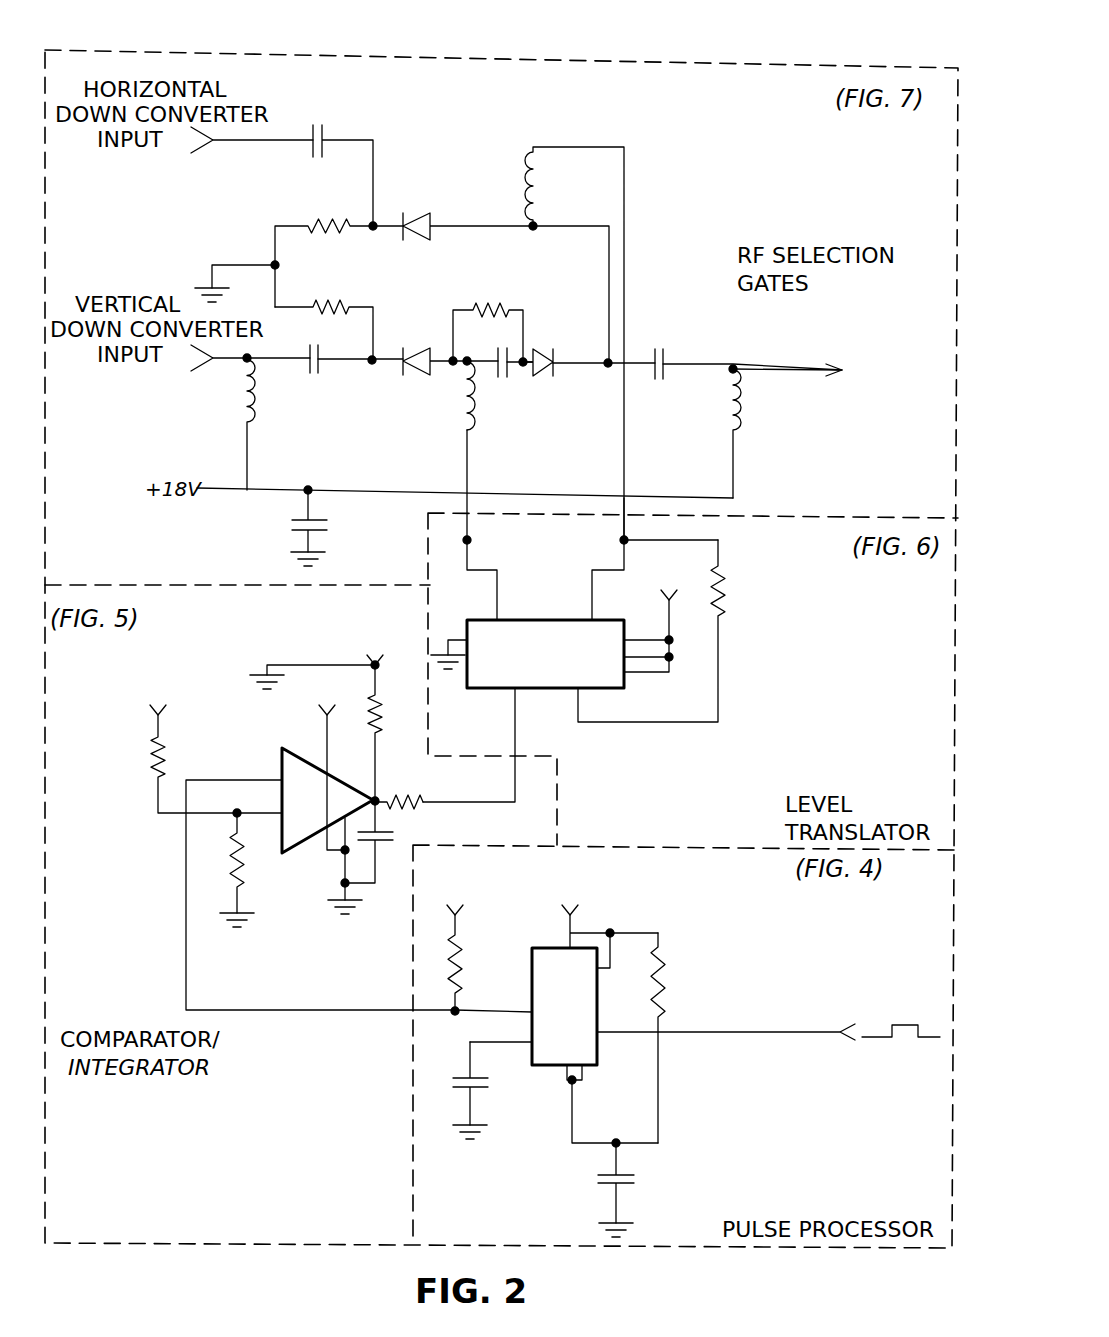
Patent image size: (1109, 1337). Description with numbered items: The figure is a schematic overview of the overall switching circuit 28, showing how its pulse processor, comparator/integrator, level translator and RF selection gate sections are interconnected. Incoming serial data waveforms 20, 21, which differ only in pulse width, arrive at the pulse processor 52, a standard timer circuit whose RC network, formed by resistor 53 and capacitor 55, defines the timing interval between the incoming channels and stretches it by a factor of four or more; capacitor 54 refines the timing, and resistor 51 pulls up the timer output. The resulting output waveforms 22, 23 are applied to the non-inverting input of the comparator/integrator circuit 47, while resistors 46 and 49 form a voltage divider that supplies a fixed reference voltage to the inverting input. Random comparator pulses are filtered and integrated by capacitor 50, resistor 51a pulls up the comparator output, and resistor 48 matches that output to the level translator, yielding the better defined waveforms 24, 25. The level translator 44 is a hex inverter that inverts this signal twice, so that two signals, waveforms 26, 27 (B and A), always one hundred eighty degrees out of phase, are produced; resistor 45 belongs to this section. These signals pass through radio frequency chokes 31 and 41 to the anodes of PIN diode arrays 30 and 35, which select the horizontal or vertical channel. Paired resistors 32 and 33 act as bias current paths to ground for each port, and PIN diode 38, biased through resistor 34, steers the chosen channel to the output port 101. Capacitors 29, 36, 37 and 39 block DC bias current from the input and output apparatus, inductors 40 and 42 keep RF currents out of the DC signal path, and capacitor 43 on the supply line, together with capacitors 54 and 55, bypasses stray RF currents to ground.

The overall switching circuit 28 is at (783, 53).
The capacitor 29 is at (312, 122).
The PIN diode array 30 is at (418, 213).
The radio frequency choke 31 is at (530, 162).
The resistor 32 is at (312, 222).
The resistor 33 is at (325, 302).
The resistor 34 is at (477, 305).
The PIN diode array 35 is at (415, 348).
The capacitor 36 is at (322, 370).
The capacitor 37 is at (494, 378).
The PIN diode 38 is at (542, 348).
The capacitor 39 is at (668, 380).
The inductor 40 is at (252, 421).
The radio frequency choke 41 is at (462, 430).
The inductor 42 is at (738, 431).
The capacitor 43 is at (322, 533).
The level translator 44 is at (556, 640).
The resistor 45 is at (725, 568).
The resistor 46 is at (150, 760).
The comparator/integrator circuit 47 is at (304, 790).
The resistor 48 is at (406, 791).
The resistor 49 is at (235, 882).
The capacitor 50 is at (398, 833).
The resistor 51 is at (440, 955).
The resistor 51a is at (380, 692).
The pulse processor 52 is at (546, 985).
The RC network resistor 53 is at (660, 975).
The capacitor 54 is at (480, 1090).
The RC network capacitor 55 is at (598, 1183).
The output port 101 is at (806, 368).
The waveform 26 is at (626, 546).
The waveform 27 is at (470, 540).
The waveform 24 is at (530, 745).
The waveform 25 is at (515, 715).
The waveform 22 is at (359, 896).
The waveform 23 is at (186, 990).
The waveform 20 is at (768, 1010).
The waveform 21 is at (800, 1032).